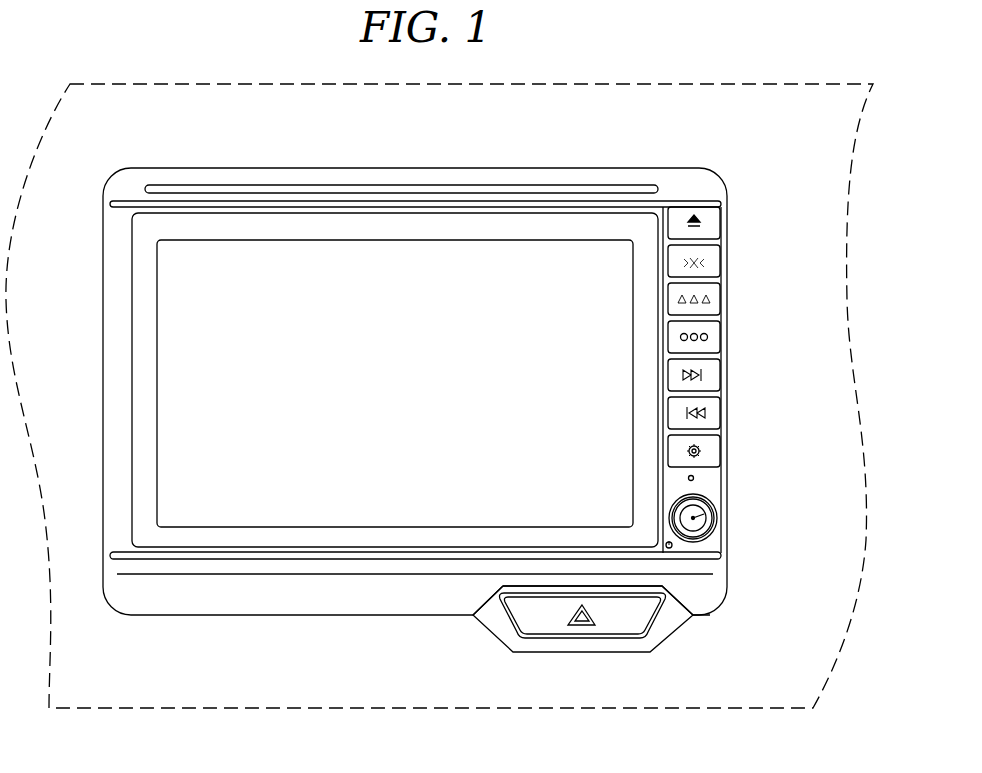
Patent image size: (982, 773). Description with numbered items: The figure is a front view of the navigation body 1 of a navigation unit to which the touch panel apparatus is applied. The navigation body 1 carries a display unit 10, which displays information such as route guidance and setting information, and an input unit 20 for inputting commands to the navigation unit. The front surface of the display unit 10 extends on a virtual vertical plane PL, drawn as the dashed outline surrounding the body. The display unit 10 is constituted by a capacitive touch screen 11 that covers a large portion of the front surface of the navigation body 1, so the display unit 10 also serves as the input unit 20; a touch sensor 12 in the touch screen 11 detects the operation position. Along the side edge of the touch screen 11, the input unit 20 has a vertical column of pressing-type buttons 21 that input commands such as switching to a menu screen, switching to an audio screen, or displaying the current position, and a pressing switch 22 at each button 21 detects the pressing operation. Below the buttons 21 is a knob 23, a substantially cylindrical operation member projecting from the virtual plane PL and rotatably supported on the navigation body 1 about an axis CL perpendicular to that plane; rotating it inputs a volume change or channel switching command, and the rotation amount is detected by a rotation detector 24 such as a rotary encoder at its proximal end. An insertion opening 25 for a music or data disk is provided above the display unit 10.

The navigation body 1 is at (603, 166).
The display unit 10 is at (157, 288).
The touch screen 11 is at (220, 266).
The touch sensor 12 is at (312, 265).
The input unit 20 is at (745, 263).
The buttons 21 is at (713, 298).
The pressing switch 22 is at (712, 218).
The knob 23 is at (710, 499).
The rotation detector 24 is at (713, 514).
The insertion opening 25 is at (545, 185).
The axis CL is at (716, 531).
The virtual plane PL is at (720, 680).